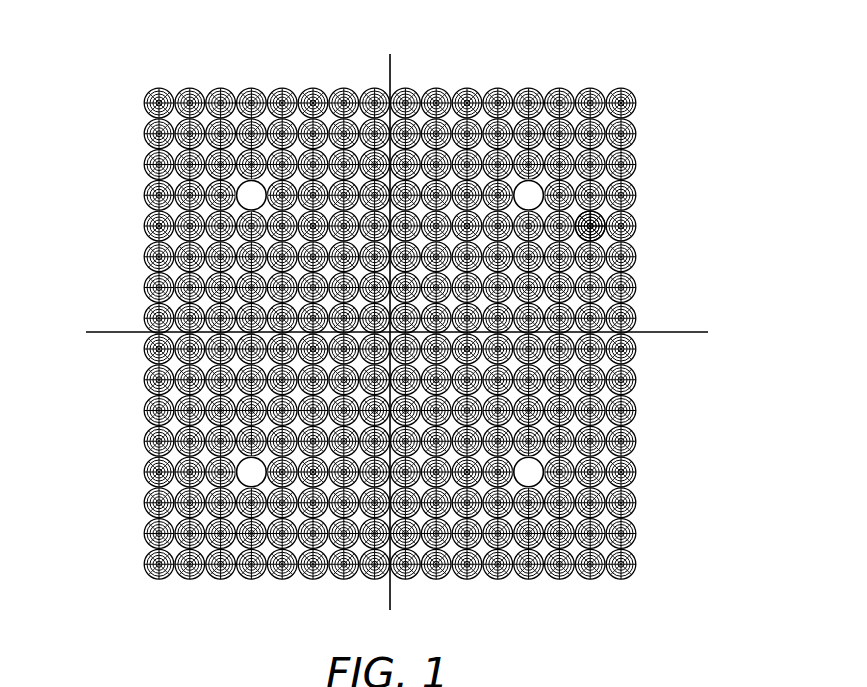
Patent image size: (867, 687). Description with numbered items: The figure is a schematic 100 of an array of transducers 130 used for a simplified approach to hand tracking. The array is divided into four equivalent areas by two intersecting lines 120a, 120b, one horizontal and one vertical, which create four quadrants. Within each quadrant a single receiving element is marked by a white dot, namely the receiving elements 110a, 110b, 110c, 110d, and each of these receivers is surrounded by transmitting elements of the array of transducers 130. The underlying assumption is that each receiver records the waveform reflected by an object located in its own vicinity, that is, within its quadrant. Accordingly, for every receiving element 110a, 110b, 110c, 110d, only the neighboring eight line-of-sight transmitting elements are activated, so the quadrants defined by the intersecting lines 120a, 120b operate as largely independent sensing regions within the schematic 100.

The schematic 100 is at (633, 58).
The receiving element 110a is at (230, 186).
The receiving element 110b is at (534, 183).
The receiving element 110c is at (230, 467).
The receiving element 110d is at (534, 458).
The intersecting line 120a is at (122, 326).
The intersecting line 120b is at (383, 594).
The transducer 130 is at (594, 230).